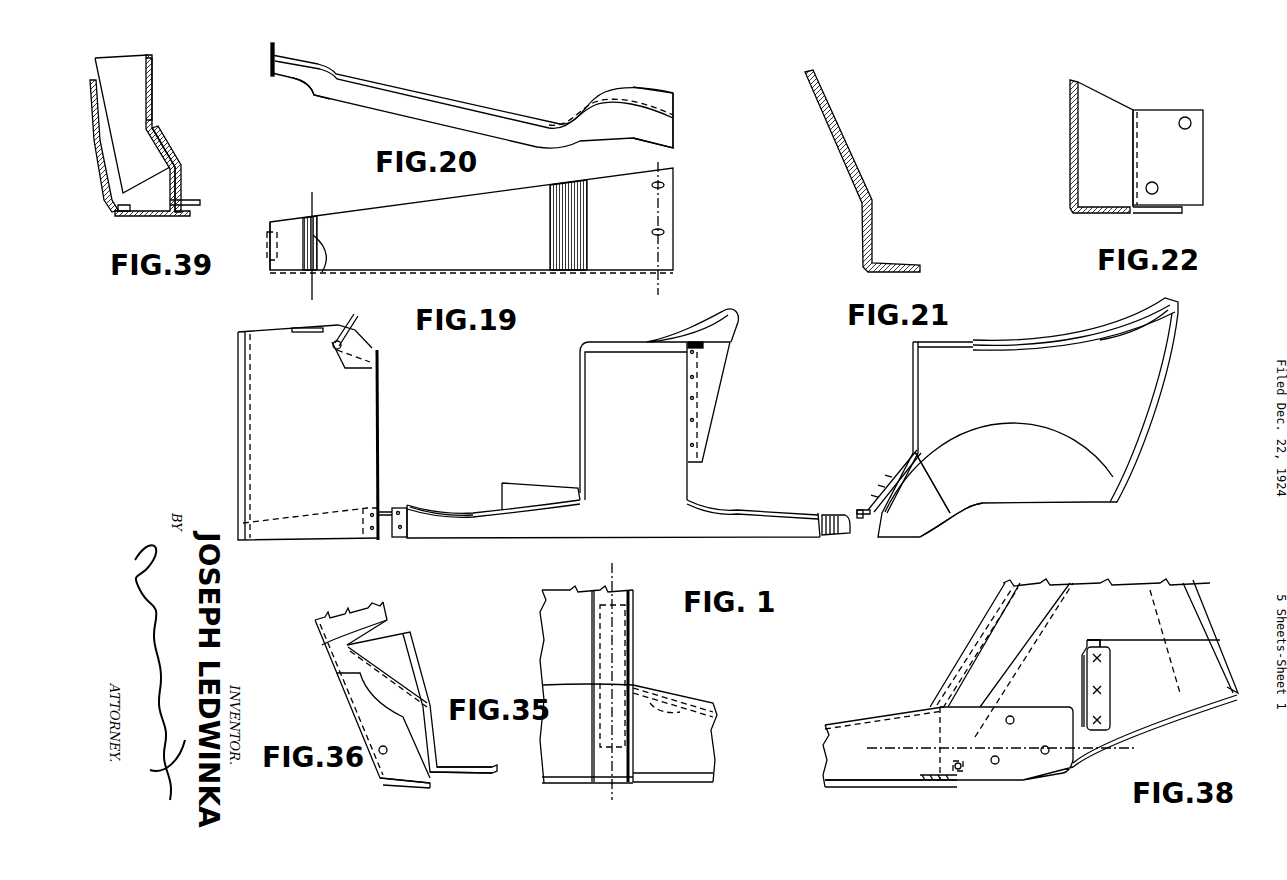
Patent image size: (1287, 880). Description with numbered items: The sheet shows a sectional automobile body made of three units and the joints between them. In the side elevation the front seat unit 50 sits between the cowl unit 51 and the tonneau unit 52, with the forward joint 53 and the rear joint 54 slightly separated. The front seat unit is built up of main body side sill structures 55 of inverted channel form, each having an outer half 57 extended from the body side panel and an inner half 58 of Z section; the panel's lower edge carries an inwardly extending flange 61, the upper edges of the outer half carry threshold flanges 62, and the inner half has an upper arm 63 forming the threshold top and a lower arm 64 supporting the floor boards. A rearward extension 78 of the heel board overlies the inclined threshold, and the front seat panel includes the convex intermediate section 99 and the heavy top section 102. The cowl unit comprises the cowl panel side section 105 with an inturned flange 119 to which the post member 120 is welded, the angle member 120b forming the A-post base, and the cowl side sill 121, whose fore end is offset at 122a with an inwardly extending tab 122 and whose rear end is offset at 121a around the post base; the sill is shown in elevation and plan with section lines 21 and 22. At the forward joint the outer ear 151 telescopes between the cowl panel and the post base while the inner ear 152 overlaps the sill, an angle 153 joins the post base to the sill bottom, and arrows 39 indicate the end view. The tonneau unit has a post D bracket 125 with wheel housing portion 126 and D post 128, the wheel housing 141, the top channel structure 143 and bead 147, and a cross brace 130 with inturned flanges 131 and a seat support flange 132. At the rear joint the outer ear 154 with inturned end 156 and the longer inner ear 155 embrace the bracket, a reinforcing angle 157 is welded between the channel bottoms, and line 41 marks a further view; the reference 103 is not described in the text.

In FIG. 1, the front seat unit 50 is at (603, 415).
In FIG. 1, the cowl unit 51 is at (283, 420).
In FIG. 1, the tonneau unit 52 is at (1135, 398).
In FIG. 1, the joint between front seat unit and cowl unit 53 is at (381, 542).
In FIG. 1, the joint between front seat unit and tonneau unit 54 is at (850, 539).
In FIG. 36, the main body side sill structure 55 is at (342, 620).
In FIG. 1, the outer half of the sill 57 is at (520, 527).
In FIG. 36, the outer half of the sill 57 is at (330, 658).
In FIG. 36, the inner half of the sill 58 is at (402, 687).
In FIG. 38, the inner half of the sill 58 is at (887, 760).
In FIG. 36, the inwardly extending flange 61 is at (408, 787).
In FIG. 38, the inwardly extending flange 61 is at (908, 783).
In FIG. 36, the inwardly-extending flanges 62 is at (383, 617).
In FIG. 1, the upper arm 63 is at (438, 512).
In FIG. 36, the lower arm 64 is at (473, 770).
In FIG. 38, the lower arm 64 is at (930, 780).
In FIG. 1, the rearward extension 78 is at (525, 493).
In FIG. 1, the intermediate front seat panel section 99 is at (722, 398).
In FIG. 1, the top section of the seat panel 102 is at (730, 332).
In FIG. 1, the cowl flange 103 is at (730, 313).
In FIG. 39, the cowl panel side section 105 is at (108, 185).
In FIG. 35, the cowl panel side section 105 is at (560, 645).
In FIG. 1, the inturned flange 119 is at (378, 452).
In FIG. 39, the post member 120 is at (140, 88).
In FIG. 39, the angle member 120b is at (157, 83).
In FIG. 35, the angle member 120b is at (665, 690).
In FIG. 39, the cowl side sill 121 is at (175, 191).
In FIG. 20, the cowl side sill 121 is at (487, 112).
In FIG. 19, the cowl side sill 121 is at (470, 220).
In FIG. 21, the cowl side sill 121 is at (870, 202).
In FIG. 22, the cowl side sill 121 is at (1101, 146).
In FIG. 1, the cowl side sill 121 is at (318, 517).
In FIG. 35, the cowl side sill 121 is at (567, 733).
In FIG. 20, the rear end offset 121a is at (665, 102).
In FIG. 19, the rear end offset 121a is at (627, 215).
In FIG. 20, the inwardly extending tab 122 is at (270, 62).
In FIG. 22, the inwardly extending tab 122 is at (1177, 173).
In FIG. 20, the fore end offset 122a is at (308, 100).
In FIG. 19, the fore end offset 122a is at (323, 273).
In FIG. 1, the post D bracket 125 is at (922, 510).
In FIG. 38, the post D bracket 125 is at (1040, 638).
In FIG. 1, the wheel housing portion 126 is at (1013, 423).
In FIG. 1, the D post 128 is at (907, 380).
In FIG. 38, the heelboard and seat support cross brace 130 is at (1082, 678).
In FIG. 38, the inturned flanges 131 is at (1102, 672).
In FIG. 38, the rearward extending flange 132 is at (1100, 642).
In FIG. 1, the wheel housing 141 is at (999, 467).
In FIG. 1, the channel structure 143 is at (1167, 298).
In FIG. 1, the outward bead 147 is at (1140, 330).
In FIG. 39, the outer ear 151 is at (130, 210).
In FIG. 1, the outer ear 151 is at (405, 530).
In FIG. 39, the inner ear 152 is at (170, 147).
In FIG. 35, the inner ear 152 is at (593, 762).
In FIG. 35, the angle 153 is at (700, 697).
In FIG. 36, the outer ear 154 is at (370, 760).
In FIG. 1, the inner ear 155 is at (832, 517).
In FIG. 36, the inner ear 155 is at (422, 663).
In FIG. 38, the inner ear 155 is at (1023, 748).
In FIG. 36, the inturned end 156 is at (384, 739).
In FIG. 38, the inturned end 156 is at (973, 767).
In FIG. 1, the reinforcing angle 157 is at (860, 517).
In FIG. 38, the reinforcing angle 157 is at (903, 723).
In FIG. 19, the section line 21— 21 is at (650, 296).
In FIG. 19, the section line 22— 22 is at (304, 305).
In FIG. 35, the arrows 39— 39 is at (624, 801).
In FIG. 38, the section line 41 is at (1135, 754).